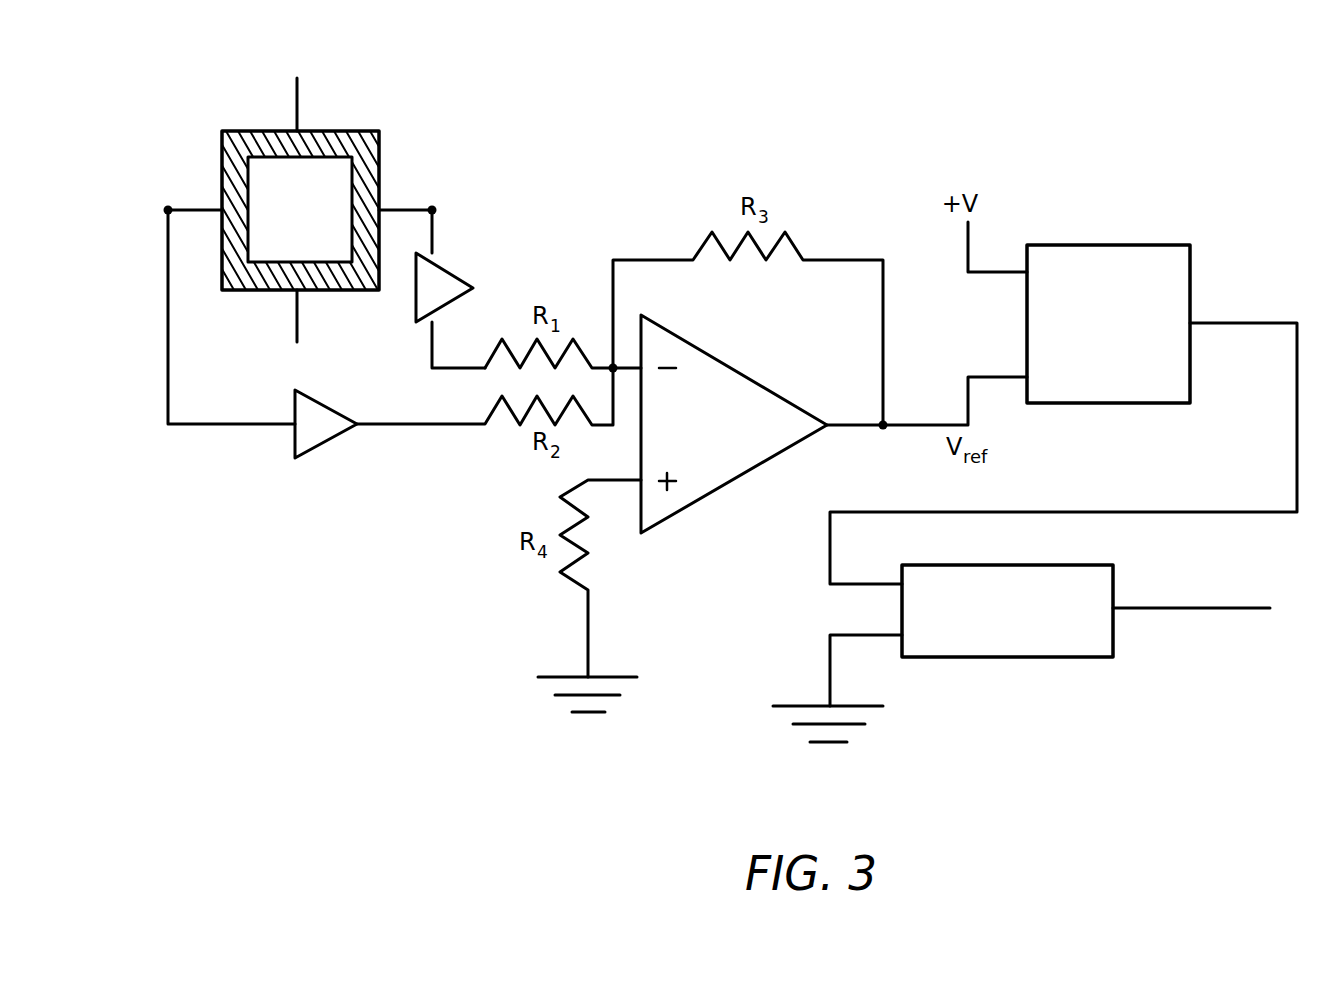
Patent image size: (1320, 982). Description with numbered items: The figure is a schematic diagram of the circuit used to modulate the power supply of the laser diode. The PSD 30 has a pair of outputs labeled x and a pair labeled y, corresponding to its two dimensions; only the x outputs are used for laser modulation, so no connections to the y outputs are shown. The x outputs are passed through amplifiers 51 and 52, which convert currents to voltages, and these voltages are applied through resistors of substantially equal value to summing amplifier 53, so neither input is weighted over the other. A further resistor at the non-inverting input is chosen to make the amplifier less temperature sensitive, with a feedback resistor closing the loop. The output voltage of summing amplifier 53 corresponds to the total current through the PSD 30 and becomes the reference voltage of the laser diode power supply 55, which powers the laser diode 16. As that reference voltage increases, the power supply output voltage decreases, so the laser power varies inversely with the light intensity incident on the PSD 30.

The PSD 30 is at (342, 215).
The amplifier 51 is at (447, 283).
The amplifier 52 is at (313, 435).
The summing amplifier 53 is at (702, 478).
The laser diode power supply 55 is at (1175, 258).
The laser diode 16 is at (1100, 598).